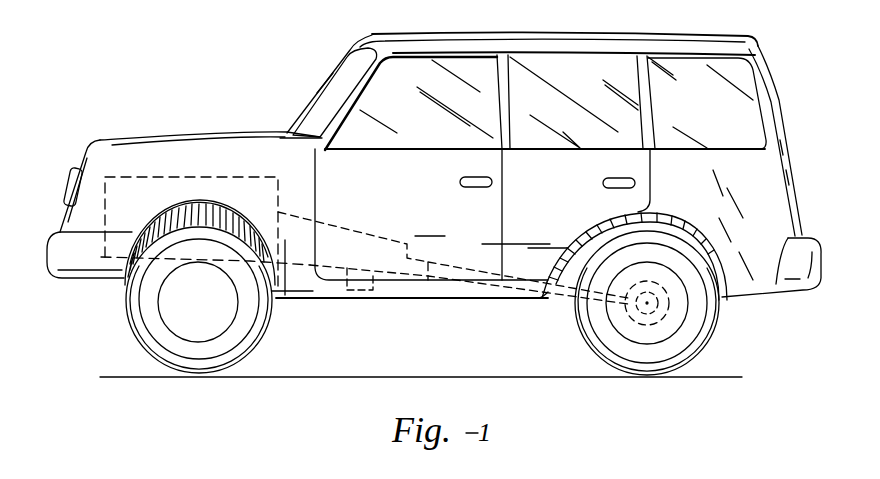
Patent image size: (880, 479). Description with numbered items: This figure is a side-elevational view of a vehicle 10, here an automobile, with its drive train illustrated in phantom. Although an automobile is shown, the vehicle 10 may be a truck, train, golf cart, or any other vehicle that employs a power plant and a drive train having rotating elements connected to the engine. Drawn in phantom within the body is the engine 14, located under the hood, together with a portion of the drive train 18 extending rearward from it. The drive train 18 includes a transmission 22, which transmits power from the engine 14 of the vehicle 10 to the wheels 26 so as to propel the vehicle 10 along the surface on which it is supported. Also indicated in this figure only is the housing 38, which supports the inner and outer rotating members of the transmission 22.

The vehicle 10 is at (260, 108).
The engine 14 is at (180, 177).
The drive train 18 is at (535, 296).
The transmission 22 is at (343, 233).
The wheels 26 is at (258, 343).
The housing 38 is at (347, 292).